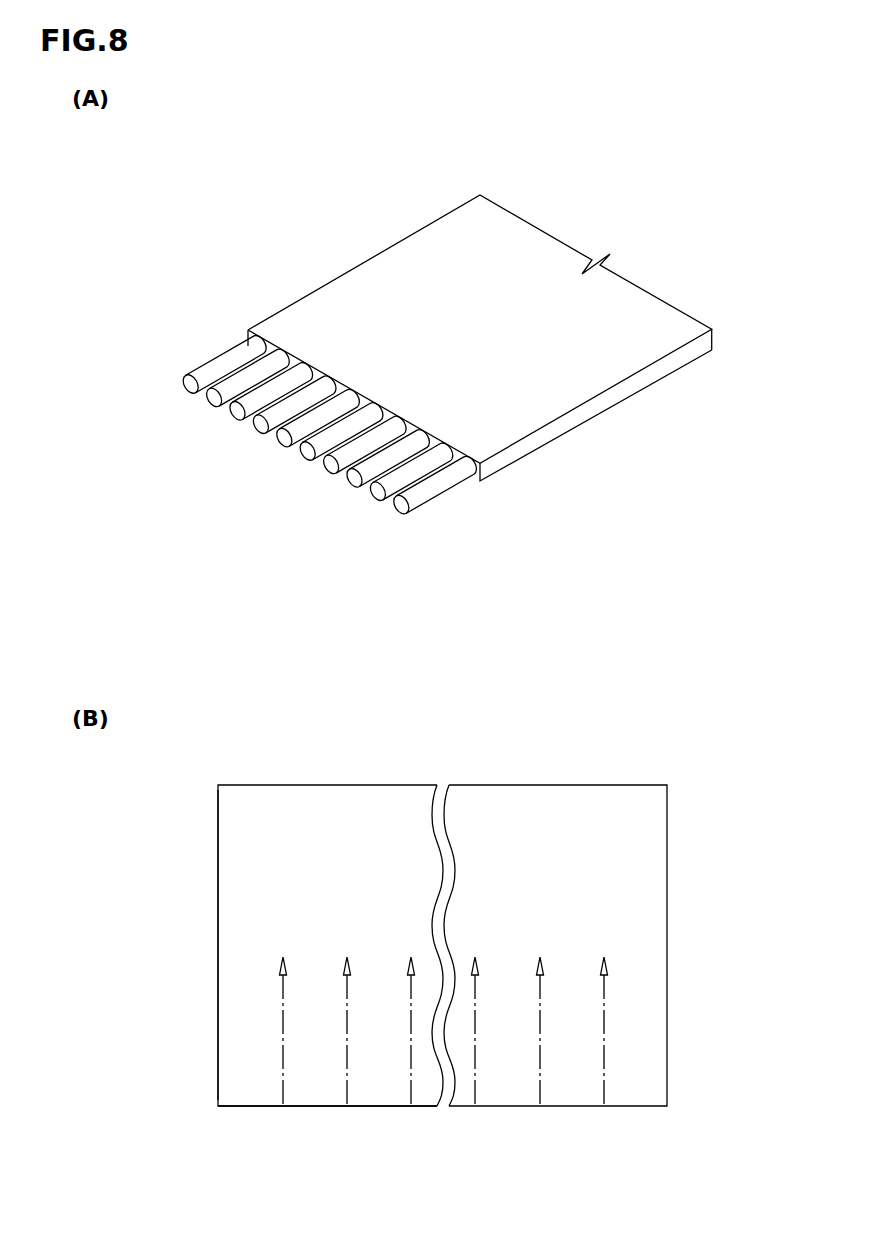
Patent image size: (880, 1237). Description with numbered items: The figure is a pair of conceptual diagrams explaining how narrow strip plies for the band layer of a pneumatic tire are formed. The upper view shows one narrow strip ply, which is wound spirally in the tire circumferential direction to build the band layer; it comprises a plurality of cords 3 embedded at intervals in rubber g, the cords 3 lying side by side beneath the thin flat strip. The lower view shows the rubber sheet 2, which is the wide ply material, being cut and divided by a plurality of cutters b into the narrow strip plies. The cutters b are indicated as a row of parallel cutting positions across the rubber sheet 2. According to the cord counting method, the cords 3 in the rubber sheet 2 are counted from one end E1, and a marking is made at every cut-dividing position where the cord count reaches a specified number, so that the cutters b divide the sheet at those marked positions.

The cord 3 is at (242, 385).
The rubber g is at (476, 478).
The rubber sheet 2 is at (652, 808).
The one end E1 is at (218, 830).
The cutter b is at (283, 962).